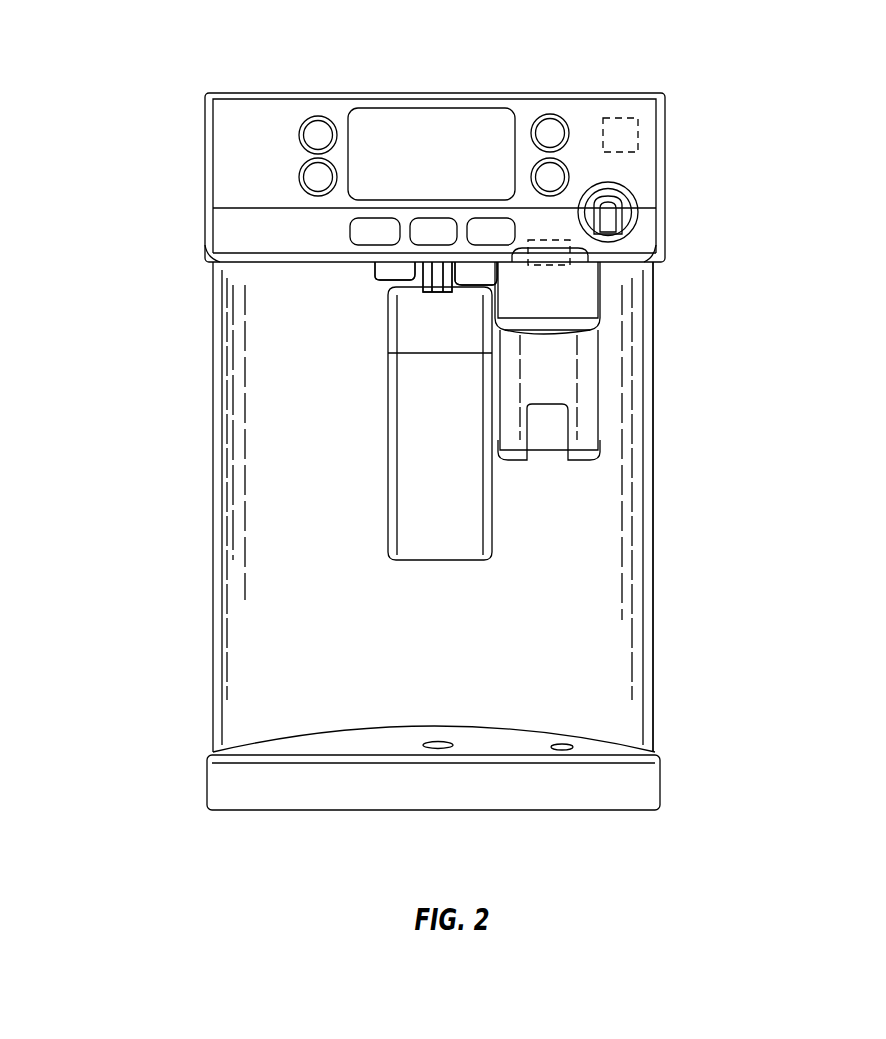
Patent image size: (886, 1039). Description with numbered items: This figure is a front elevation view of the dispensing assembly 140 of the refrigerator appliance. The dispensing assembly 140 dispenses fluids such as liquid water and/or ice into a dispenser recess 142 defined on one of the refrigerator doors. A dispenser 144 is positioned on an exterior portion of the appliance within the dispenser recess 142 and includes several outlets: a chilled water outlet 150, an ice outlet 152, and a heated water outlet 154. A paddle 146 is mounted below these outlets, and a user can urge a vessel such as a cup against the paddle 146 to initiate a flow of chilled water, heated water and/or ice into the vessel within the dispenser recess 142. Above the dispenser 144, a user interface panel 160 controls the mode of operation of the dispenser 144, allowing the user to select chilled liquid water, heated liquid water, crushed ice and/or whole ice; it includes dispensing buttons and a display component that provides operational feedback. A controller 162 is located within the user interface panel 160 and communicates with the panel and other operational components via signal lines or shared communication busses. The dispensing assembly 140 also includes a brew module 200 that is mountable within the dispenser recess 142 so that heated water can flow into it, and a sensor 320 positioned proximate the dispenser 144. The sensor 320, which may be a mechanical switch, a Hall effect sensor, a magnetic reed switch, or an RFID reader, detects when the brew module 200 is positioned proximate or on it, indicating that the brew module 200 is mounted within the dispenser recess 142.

The dispensing assembly 140 is at (97, 102).
The dispenser recess 142 is at (657, 624).
The dispenser 144 is at (655, 480).
The paddle 146 is at (418, 426).
The chilled water outlet 150 is at (430, 297).
The ice outlet 152 is at (396, 270).
The heated water outlet 154 is at (445, 297).
The user interface panel 160 is at (292, 136).
The controller 162 is at (645, 140).
The brew module 200 is at (598, 362).
The sensor 320 is at (572, 250).